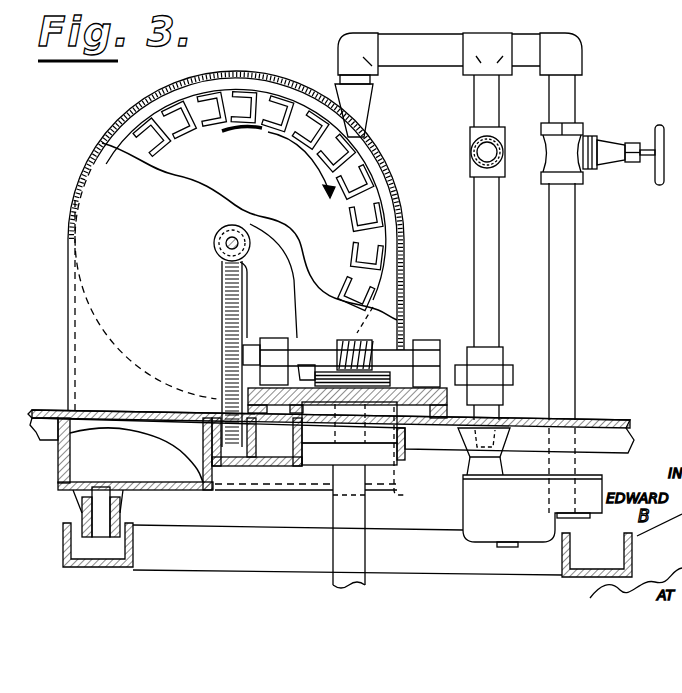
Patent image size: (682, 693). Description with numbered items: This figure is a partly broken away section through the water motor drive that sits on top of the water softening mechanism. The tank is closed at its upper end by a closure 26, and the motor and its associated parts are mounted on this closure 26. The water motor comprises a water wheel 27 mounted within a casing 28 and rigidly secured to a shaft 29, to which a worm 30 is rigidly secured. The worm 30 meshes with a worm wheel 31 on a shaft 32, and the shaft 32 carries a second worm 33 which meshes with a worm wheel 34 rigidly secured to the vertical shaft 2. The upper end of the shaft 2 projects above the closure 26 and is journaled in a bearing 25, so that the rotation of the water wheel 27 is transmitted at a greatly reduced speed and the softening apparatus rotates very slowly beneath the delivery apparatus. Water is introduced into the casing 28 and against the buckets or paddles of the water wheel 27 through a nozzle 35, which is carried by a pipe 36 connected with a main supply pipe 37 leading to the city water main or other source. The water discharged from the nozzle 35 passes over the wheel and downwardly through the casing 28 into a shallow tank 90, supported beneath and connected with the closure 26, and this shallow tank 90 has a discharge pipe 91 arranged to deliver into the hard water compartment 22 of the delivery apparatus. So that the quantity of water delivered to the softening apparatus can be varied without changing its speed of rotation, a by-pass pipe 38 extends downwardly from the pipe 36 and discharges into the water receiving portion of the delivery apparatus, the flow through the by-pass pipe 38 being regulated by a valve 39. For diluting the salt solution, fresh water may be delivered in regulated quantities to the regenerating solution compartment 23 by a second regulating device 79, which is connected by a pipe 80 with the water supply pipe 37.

The vertical shaft 2 is at (356, 515).
The hard water compartment 22 is at (98, 545).
The regenerating solution compartment 23 is at (597, 555).
The upper bearing 25 is at (353, 448).
The closure 26 is at (338, 420).
The water wheel 27 is at (249, 232).
The casing 28 is at (400, 211).
The shaft 29 is at (228, 240).
The worm 30 is at (222, 251).
The worm wheel 31 is at (224, 317).
The shaft 32 is at (300, 348).
The second worm 33 is at (374, 340).
The worm wheel 34 is at (377, 348).
The nozzle 35 is at (358, 118).
The pipe 36 is at (441, 57).
The main supply pipe 37 is at (470, 159).
The by-pass pipe 38 is at (574, 278).
The valve 39 is at (577, 147).
The second regulating device 79 is at (532, 511).
The pipe 80 is at (490, 253).
The shallow tank 90 is at (72, 447).
The discharge pipe 91 is at (103, 514).